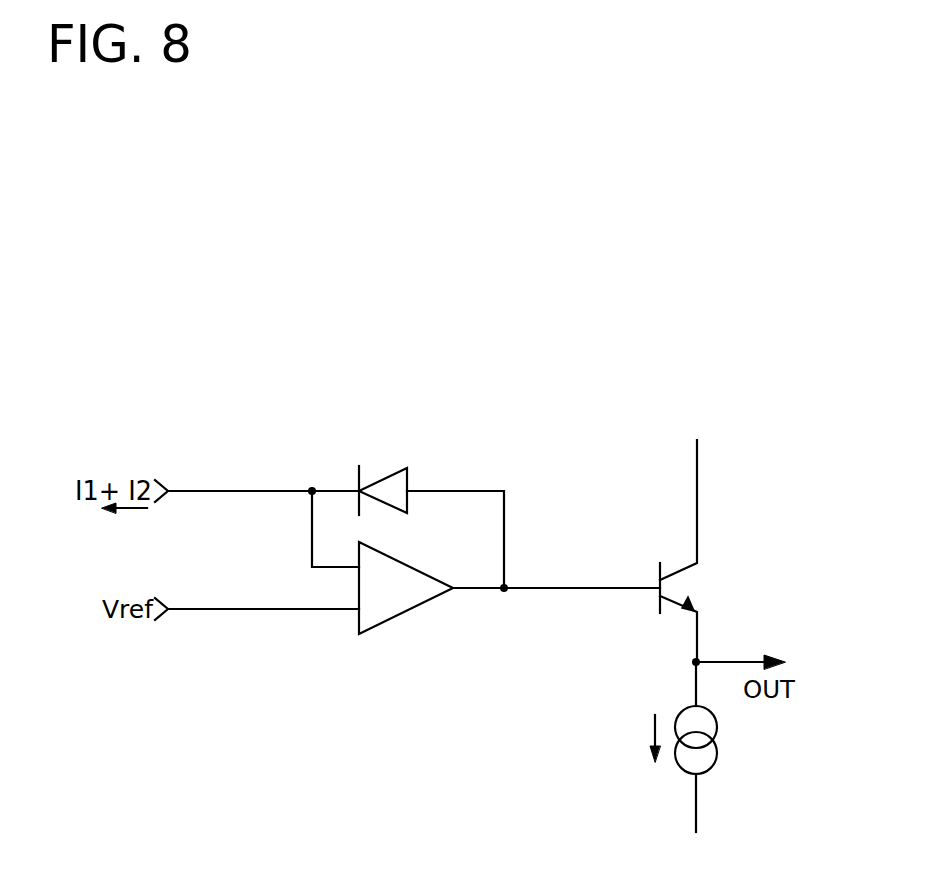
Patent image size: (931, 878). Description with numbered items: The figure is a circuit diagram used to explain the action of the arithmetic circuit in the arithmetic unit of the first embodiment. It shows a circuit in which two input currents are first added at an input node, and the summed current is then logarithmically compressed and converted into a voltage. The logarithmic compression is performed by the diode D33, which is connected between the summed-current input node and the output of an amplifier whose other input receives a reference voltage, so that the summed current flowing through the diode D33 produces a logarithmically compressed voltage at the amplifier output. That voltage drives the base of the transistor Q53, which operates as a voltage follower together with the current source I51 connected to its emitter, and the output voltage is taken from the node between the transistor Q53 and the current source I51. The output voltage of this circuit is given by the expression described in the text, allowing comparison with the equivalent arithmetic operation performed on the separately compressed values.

The diode D33 is at (413, 473).
The transistor Q53 is at (690, 585).
The current source I51 is at (718, 741).